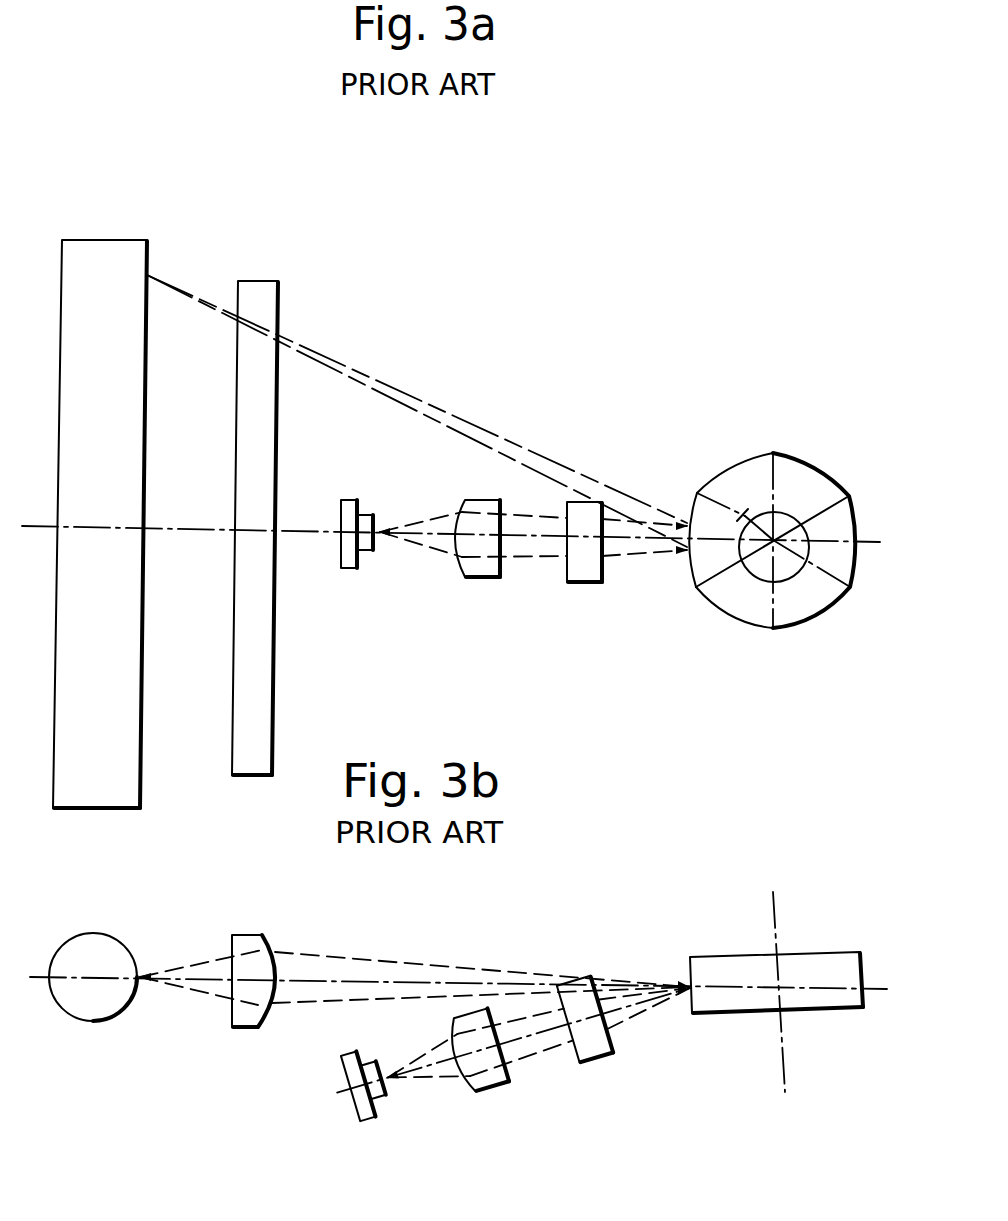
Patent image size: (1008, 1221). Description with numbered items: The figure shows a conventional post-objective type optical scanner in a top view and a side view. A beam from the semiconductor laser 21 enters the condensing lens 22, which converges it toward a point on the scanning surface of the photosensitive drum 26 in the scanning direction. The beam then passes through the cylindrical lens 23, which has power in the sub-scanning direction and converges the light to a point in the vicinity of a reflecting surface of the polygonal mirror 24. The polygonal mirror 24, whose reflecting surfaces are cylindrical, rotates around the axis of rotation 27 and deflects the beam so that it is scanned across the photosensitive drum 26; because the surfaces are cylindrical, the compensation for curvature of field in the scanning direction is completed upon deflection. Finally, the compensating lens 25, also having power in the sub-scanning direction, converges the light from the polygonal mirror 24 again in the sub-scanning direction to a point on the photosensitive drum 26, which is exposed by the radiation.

In FIG. 3A, the semiconductor laser 21 is at (345, 571).
In FIG. 3B, the semiconductor laser 21 is at (366, 1120).
In FIG. 3A, the condensing lens 22 is at (478, 582).
In FIG. 3B, the condensing lens 22 is at (487, 1084).
In FIG. 3A, the cylindrical lens 23 is at (585, 586).
In FIG. 3B, the cylindrical lens 23 is at (596, 1050).
In FIG. 3A, the polygonal mirror 24 is at (735, 482).
In FIG. 3B, the polygonal mirror 24 is at (720, 967).
In FIG. 3A, the compensating lens 25 is at (258, 287).
In FIG. 3B, the compensating lens 25 is at (245, 943).
In FIG. 3A, the photosensitive drum 26 is at (102, 257).
In FIG. 3B, the photosensitive drum 26 is at (88, 947).
In FIG. 3A, the axis of rotation 27 is at (776, 522).
In FIG. 3B, the axis of rotation 27 is at (777, 920).